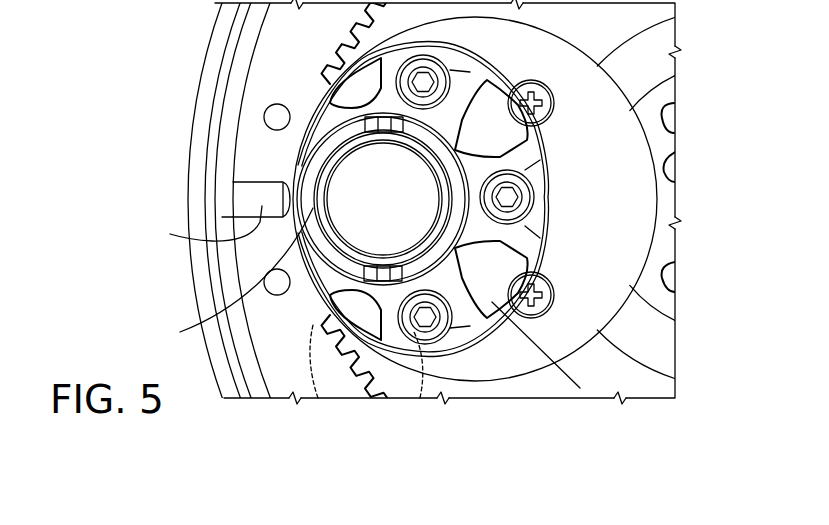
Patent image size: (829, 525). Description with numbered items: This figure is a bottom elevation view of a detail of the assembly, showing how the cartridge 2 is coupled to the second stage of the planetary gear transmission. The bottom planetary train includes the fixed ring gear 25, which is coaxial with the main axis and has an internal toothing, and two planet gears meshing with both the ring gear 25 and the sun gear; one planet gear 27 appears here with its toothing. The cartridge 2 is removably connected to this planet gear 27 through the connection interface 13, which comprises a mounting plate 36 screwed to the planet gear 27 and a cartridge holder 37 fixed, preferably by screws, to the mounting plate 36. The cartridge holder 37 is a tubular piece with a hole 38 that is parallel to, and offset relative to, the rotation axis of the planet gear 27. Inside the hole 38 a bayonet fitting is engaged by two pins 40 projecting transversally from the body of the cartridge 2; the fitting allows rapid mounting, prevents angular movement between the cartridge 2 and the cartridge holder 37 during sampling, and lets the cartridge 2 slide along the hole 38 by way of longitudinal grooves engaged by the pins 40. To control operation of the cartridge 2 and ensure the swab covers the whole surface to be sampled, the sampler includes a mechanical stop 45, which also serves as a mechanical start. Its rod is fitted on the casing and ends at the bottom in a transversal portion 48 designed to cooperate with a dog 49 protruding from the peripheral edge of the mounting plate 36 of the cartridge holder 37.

The cartridge 2 is at (207, 327).
The connection interface 13 is at (631, 328).
The fixed ring gear 25 is at (266, 59).
The planet gear 27 is at (664, 197).
The mounting plate 36 is at (498, 357).
The cartridge holder 37 is at (580, 388).
The hole 38 is at (318, 398).
The pins 40 is at (421, 398).
The mechanical stop 45 is at (228, 217).
The transversal portion 48 is at (170, 234).
The dog 49 is at (280, 182).